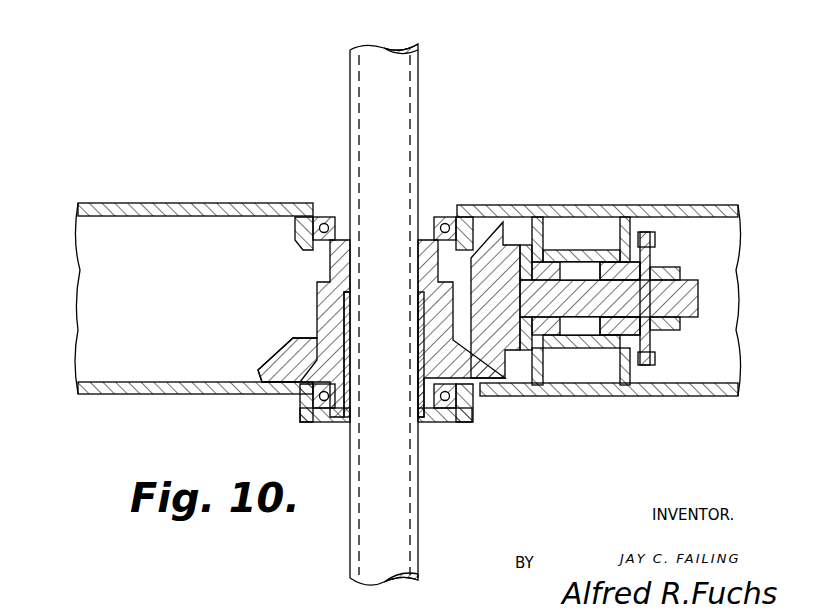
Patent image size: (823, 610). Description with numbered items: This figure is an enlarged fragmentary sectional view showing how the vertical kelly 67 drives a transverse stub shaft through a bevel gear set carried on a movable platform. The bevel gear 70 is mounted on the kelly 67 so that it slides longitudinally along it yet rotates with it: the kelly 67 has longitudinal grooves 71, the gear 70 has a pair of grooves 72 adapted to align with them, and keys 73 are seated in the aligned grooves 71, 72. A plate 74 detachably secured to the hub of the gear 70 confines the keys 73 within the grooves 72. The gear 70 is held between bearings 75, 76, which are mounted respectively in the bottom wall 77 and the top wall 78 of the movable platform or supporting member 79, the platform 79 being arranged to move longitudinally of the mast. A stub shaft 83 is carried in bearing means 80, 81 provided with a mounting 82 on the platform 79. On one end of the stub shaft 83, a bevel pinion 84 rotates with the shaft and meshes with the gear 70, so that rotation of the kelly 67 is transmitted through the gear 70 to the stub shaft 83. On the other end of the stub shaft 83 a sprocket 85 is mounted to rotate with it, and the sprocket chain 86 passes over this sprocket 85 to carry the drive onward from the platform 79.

The kelly 67 is at (400, 472).
The bevel gear 70 is at (295, 352).
The longitudinal grooves 71 is at (357, 135).
The grooves 72 is at (348, 318).
The keys 73 is at (348, 376).
The plate 74 is at (343, 420).
The bearing 75 is at (460, 420).
The bearing 76 is at (445, 222).
The bottom wall 77 is at (575, 394).
The top wall 78 is at (583, 208).
The platform or supporting member 79 is at (97, 347).
The bearing means 80 is at (545, 270).
The bearing means 81 is at (614, 332).
The mounting 82 is at (596, 238).
The stub shaft 83 is at (690, 298).
The bevel pinion 84 is at (508, 240).
The sprocket 85 is at (648, 255).
The sprocket chain 86 is at (655, 240).